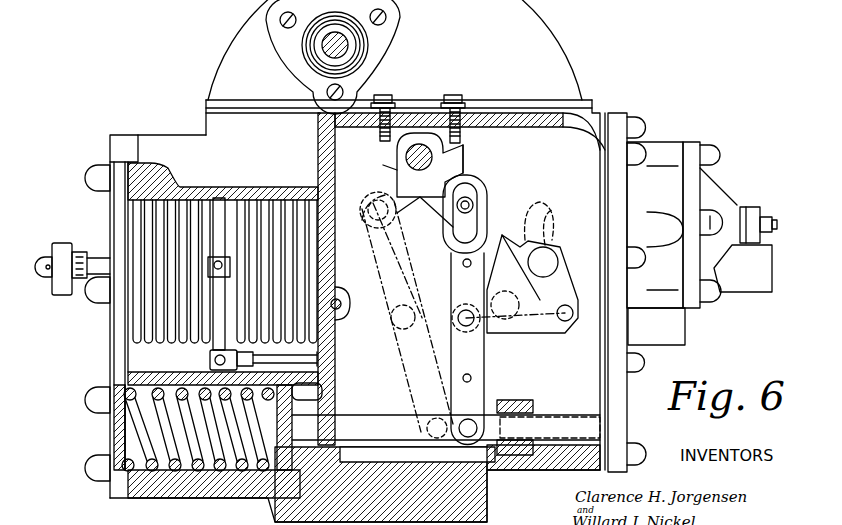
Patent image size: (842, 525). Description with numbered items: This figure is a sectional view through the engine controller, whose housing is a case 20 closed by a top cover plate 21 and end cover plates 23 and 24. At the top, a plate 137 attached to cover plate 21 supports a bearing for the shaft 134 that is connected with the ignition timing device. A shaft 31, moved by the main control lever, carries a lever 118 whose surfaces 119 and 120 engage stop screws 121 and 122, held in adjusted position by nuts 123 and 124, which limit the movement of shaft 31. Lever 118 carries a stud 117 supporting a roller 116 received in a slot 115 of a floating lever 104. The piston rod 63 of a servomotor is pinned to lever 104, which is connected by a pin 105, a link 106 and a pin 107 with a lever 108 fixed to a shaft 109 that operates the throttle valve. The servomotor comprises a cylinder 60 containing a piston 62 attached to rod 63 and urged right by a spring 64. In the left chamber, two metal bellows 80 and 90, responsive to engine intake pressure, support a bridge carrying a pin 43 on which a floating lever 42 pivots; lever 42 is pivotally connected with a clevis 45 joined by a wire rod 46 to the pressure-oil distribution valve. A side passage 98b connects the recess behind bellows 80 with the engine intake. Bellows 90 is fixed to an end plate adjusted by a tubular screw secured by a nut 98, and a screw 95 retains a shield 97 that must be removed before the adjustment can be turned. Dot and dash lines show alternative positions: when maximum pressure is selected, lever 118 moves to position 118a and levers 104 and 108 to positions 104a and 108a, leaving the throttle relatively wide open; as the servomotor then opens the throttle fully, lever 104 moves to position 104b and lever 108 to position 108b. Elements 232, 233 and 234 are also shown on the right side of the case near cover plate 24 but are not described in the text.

The case 20 is at (178, 135).
The cover plate 21 is at (219, 68).
The cover plate 23 is at (109, 149).
The cover plate 24 is at (621, 116).
The shaft 31 is at (406, 159).
The floating lever 42 is at (238, 343).
The pin 43 is at (218, 261).
The clevis 45 is at (232, 355).
The wire rod 46 is at (283, 363).
The cylinder 60 is at (168, 497).
The piston 62 is at (323, 391).
The piston rod 63 is at (398, 414).
The spring 64 is at (200, 471).
The metal bellows 80 is at (311, 353).
The metal bellows 90 is at (161, 343).
The screw 95 is at (43, 262).
The shield 97 is at (61, 243).
The nut 98 is at (79, 252).
The side passage 98b is at (340, 322).
The floating lever 104 is at (484, 370).
The position of lever 104 104a is at (410, 262).
The position of lever 104 104b is at (383, 277).
The pin 105 is at (480, 328).
The link 106 is at (515, 320).
The pin 107 is at (569, 320).
The lever 108 is at (565, 272).
The position of lever 108 108a is at (545, 208).
The position of lever 108 108b is at (556, 212).
The shaft 109 is at (550, 258).
The slot 115 is at (476, 236).
The roller 116 is at (472, 204).
The stud 117 is at (488, 159).
The lever 118 is at (456, 158).
The position of lever 118 118a is at (383, 165).
The surface 119 is at (395, 184).
The surface 120 is at (468, 127).
The stop screw 121 is at (384, 94).
The stop screw 122 is at (453, 94).
The nut 123 is at (396, 104).
The nut 124 is at (470, 104).
The shaft 134 is at (316, 50).
The plate 137 is at (385, 38).
The adjusting screw 232 is at (777, 221).
The lock nut 233 is at (751, 207).
The bracket body 234 is at (707, 139).